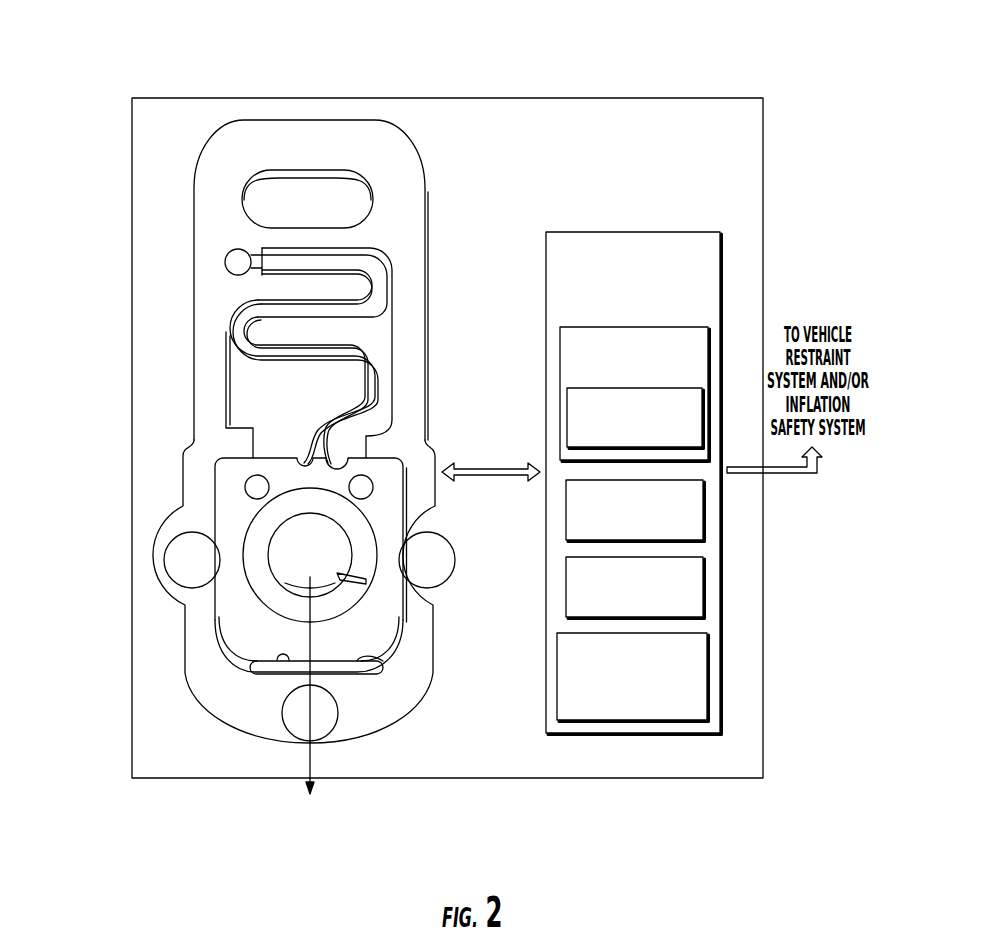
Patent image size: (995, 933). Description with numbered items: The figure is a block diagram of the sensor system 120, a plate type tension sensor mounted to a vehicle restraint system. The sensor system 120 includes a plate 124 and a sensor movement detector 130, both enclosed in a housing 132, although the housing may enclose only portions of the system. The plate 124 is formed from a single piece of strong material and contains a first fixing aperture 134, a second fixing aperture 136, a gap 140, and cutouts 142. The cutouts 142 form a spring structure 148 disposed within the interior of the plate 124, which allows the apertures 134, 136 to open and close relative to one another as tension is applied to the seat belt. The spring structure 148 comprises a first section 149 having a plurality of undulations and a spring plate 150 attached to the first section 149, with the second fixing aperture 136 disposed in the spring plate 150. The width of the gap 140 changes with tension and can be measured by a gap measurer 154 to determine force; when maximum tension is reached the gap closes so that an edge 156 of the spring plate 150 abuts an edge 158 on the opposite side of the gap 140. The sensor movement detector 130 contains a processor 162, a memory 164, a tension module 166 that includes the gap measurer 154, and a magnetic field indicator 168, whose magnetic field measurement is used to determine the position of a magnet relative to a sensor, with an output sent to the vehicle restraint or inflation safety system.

The sensor system 120 is at (339, 74).
The plate 124 is at (196, 230).
The sensor movement detector 130 is at (622, 312).
The housing 132 is at (630, 98).
The first fixing aperture 134 is at (289, 182).
The second fixing aperture 136 is at (265, 579).
The gap 140 is at (246, 669).
The cutouts 142 is at (228, 419).
The spring structure 148 is at (222, 341).
The first section 149 is at (380, 291).
The spring plate 150 is at (224, 503).
The gap measurer 154 is at (619, 439).
The edge of the spring plate 156 is at (280, 655).
The edge on opposite side of the gap 158 is at (378, 664).
The processor 162 is at (619, 529).
The memory 164 is at (619, 606).
The tension module 166 is at (619, 381).
The magnetic field indicator 168 is at (617, 709).